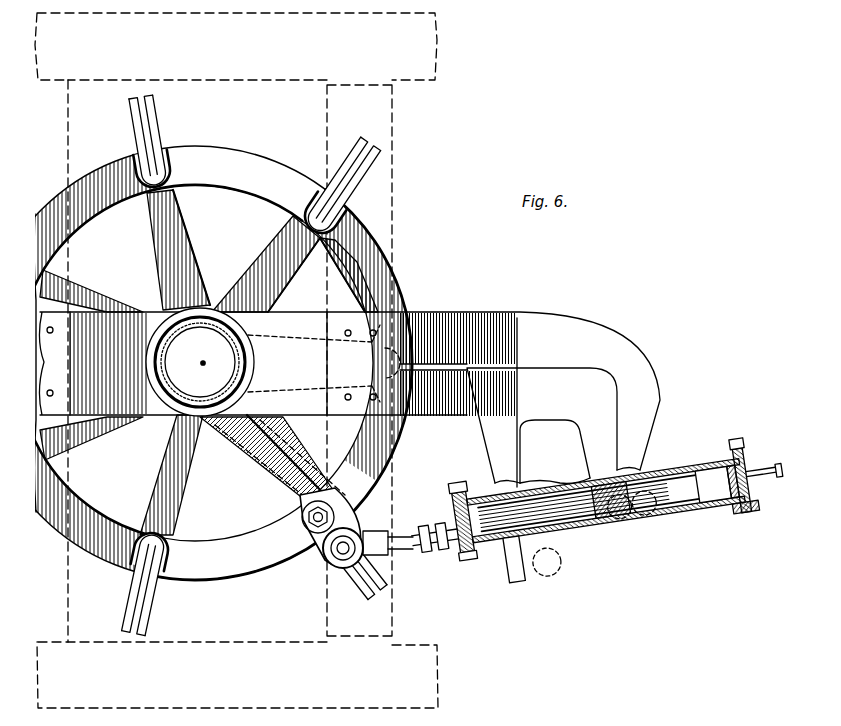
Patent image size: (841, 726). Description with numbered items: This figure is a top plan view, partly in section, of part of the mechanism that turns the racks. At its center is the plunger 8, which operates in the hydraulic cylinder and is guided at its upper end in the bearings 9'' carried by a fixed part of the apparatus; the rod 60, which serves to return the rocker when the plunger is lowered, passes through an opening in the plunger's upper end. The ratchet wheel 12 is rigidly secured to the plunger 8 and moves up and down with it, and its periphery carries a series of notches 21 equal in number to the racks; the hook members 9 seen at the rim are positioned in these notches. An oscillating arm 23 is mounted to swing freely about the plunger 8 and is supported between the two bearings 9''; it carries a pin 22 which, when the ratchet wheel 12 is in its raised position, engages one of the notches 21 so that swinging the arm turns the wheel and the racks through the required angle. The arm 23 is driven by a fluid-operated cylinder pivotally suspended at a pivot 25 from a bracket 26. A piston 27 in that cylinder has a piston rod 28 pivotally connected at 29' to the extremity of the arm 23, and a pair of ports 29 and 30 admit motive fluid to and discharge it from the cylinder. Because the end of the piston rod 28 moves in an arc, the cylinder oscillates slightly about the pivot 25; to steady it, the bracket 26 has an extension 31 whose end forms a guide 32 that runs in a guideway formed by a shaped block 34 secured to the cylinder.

The plunger 8 is at (164, 374).
The hook tube 9 is at (252, 365).
The bearings 9'' is at (209, 362).
The ratchet wheel 12 is at (272, 198).
The peripheral notches 21 is at (147, 152).
The pin 22 is at (338, 517).
The oscillating arm 23 is at (263, 490).
The pivot 25 is at (609, 518).
The bracket 26 is at (585, 326).
The piston 27 is at (740, 488).
The piston rod 28 is at (605, 521).
The port 29 is at (744, 533).
The pivotal connection 29' is at (336, 562).
The port 30 is at (466, 543).
The extension 31 is at (510, 454).
The guide 32 is at (543, 561).
The block 34 is at (555, 473).
The rod 60 is at (203, 365).